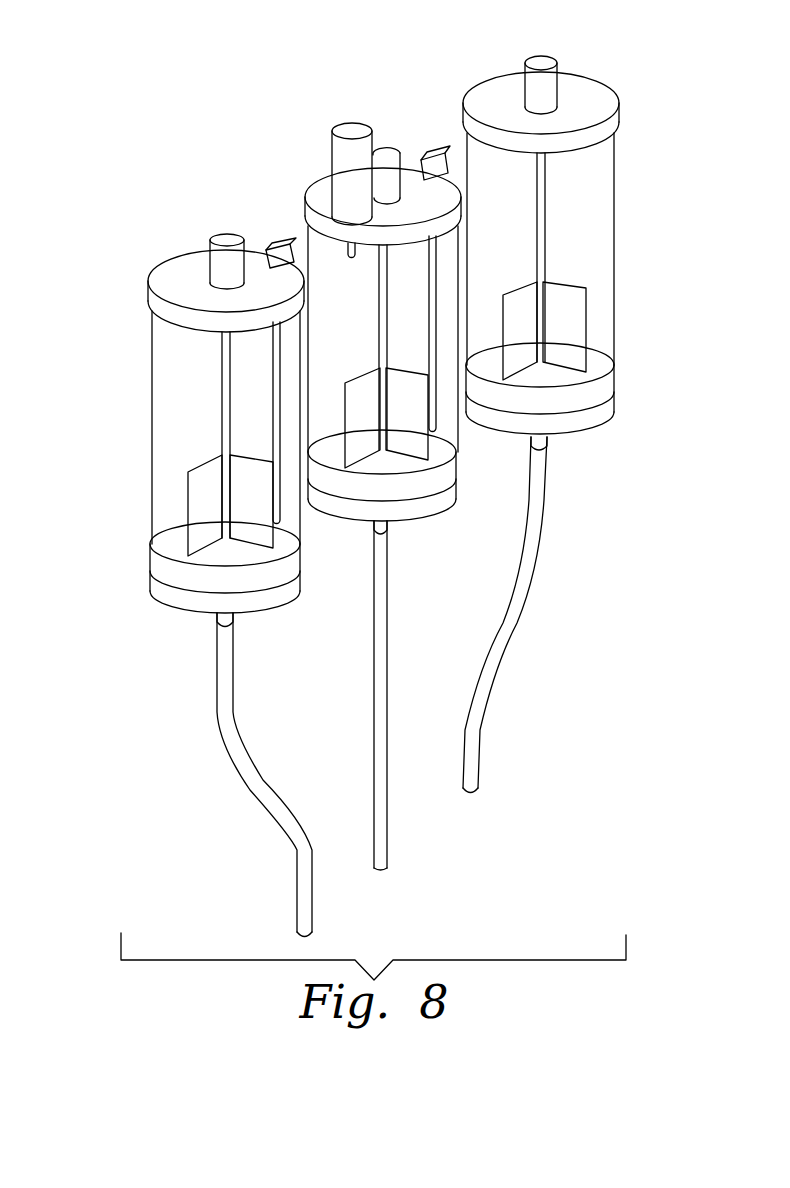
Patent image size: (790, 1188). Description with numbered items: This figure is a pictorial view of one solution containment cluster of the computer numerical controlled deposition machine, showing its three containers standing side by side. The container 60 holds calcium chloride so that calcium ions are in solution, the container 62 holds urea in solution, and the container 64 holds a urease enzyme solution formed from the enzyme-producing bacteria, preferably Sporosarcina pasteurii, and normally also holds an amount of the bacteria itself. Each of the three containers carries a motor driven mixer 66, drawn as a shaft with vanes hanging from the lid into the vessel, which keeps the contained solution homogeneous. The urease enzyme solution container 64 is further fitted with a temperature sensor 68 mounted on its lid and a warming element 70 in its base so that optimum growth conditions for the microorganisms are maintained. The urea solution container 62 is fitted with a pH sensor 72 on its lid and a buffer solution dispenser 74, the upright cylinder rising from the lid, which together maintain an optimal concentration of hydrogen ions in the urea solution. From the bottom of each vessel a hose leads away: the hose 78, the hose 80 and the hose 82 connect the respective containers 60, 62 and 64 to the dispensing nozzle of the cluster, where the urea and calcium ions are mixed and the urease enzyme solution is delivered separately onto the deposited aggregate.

The container 60 is at (600, 340).
The container 62 is at (413, 478).
The container 64 is at (187, 395).
The motor driven mixer 66 is at (200, 503).
The temperature sensor 68 is at (287, 253).
The warming element 70 is at (170, 588).
The pH sensor 72 is at (437, 152).
The buffer solution dispenser 74 is at (352, 128).
The hose 78 is at (227, 738).
The hose 80 is at (373, 642).
The hose 82 is at (510, 628).